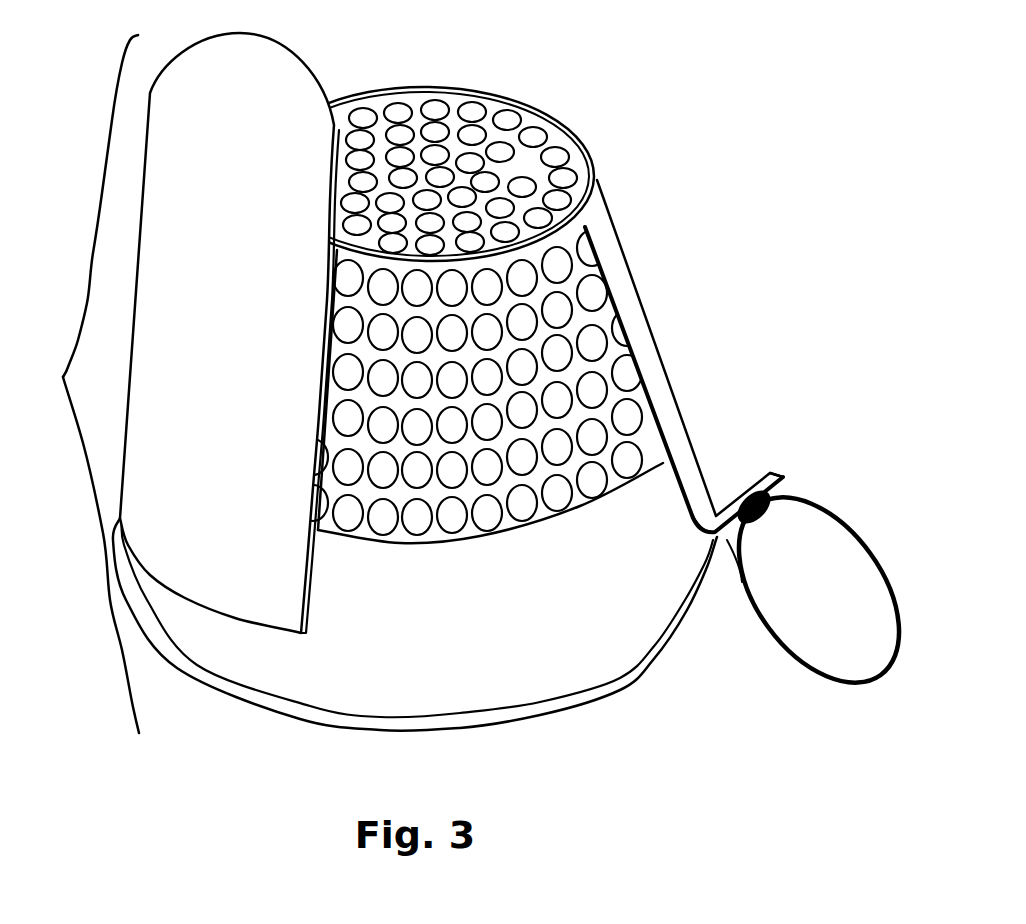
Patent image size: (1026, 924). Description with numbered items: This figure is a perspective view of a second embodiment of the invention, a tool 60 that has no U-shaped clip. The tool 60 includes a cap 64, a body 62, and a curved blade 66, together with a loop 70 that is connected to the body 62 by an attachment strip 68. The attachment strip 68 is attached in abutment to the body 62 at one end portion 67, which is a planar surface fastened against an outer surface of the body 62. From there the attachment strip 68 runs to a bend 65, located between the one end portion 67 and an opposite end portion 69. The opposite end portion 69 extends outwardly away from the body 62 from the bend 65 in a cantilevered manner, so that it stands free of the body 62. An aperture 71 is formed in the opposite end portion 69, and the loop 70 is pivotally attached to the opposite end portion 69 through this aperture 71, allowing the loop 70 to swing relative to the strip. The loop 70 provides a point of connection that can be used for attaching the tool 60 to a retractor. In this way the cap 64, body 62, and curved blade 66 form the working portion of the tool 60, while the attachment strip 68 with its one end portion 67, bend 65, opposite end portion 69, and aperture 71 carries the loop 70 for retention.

The tool 60 is at (373, 384).
The body 62 is at (650, 313).
The cap 64 is at (551, 121).
The bend 65 is at (715, 513).
The curved blade 66 is at (150, 92).
The one end portion 67 is at (604, 240).
The attachment strip 68 is at (692, 467).
The opposite end portion 69 is at (780, 468).
The loop 70 is at (832, 510).
The aperture 71 is at (718, 538).